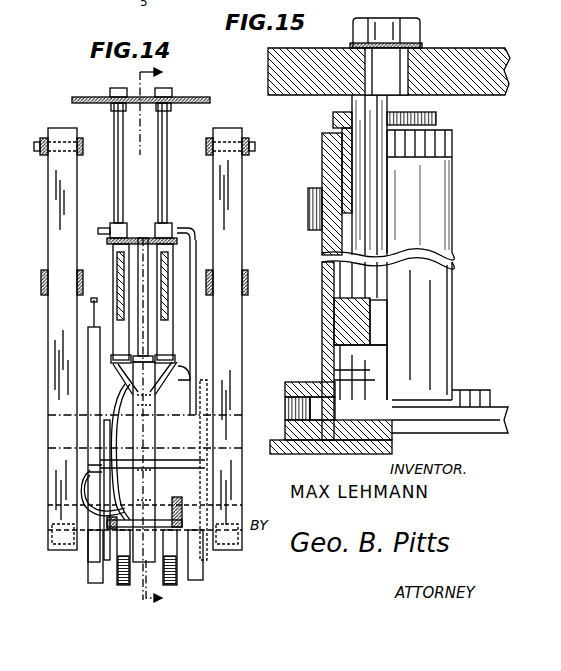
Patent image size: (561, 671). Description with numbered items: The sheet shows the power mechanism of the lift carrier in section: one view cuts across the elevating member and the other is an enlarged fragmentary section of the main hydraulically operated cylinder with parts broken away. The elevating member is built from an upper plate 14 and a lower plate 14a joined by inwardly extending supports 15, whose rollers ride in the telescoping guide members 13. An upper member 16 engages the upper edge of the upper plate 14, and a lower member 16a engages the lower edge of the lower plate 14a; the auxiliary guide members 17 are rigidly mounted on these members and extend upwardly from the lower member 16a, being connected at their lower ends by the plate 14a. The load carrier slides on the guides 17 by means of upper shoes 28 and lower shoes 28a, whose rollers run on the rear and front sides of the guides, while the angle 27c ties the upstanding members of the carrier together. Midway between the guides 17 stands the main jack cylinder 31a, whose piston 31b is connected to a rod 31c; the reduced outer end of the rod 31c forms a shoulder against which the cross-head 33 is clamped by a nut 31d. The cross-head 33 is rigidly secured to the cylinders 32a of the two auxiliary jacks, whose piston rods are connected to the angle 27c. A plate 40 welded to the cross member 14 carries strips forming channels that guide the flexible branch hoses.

In FIG. 14, the guide members 13 is at (78, 604).
In FIG. 14, the upper plate 14 is at (228, 444).
In FIG. 14, the lower plate 14a is at (243, 516).
In FIG. 14, the supports 15 is at (185, 557).
In FIG. 14, the upper member 16 is at (223, 398).
In FIG. 14, the lower member 16a is at (58, 545).
In FIG. 14, the auxiliary guide members 17 is at (54, 327).
In FIG. 14, the angle 27c is at (103, 84).
In FIG. 14, the upper shoes 28 is at (40, 152).
In FIG. 14, the lower shoes 28a is at (252, 268).
In FIG. 14, the cylinder 31a is at (149, 405).
In FIG. 15, the cylinder 31a is at (425, 192).
In FIG. 15, the piston 31b is at (322, 305).
In FIG. 15, the rod 31c is at (365, 108).
In FIG. 15, the nut 31d is at (415, 16).
In FIG. 14, the cylinders 32a is at (248, 322).
In FIG. 14, the cross-head 33 is at (104, 237).
In FIG. 15, the cross-head 33 is at (496, 50).
In FIG. 14, the plate 40 is at (178, 380).